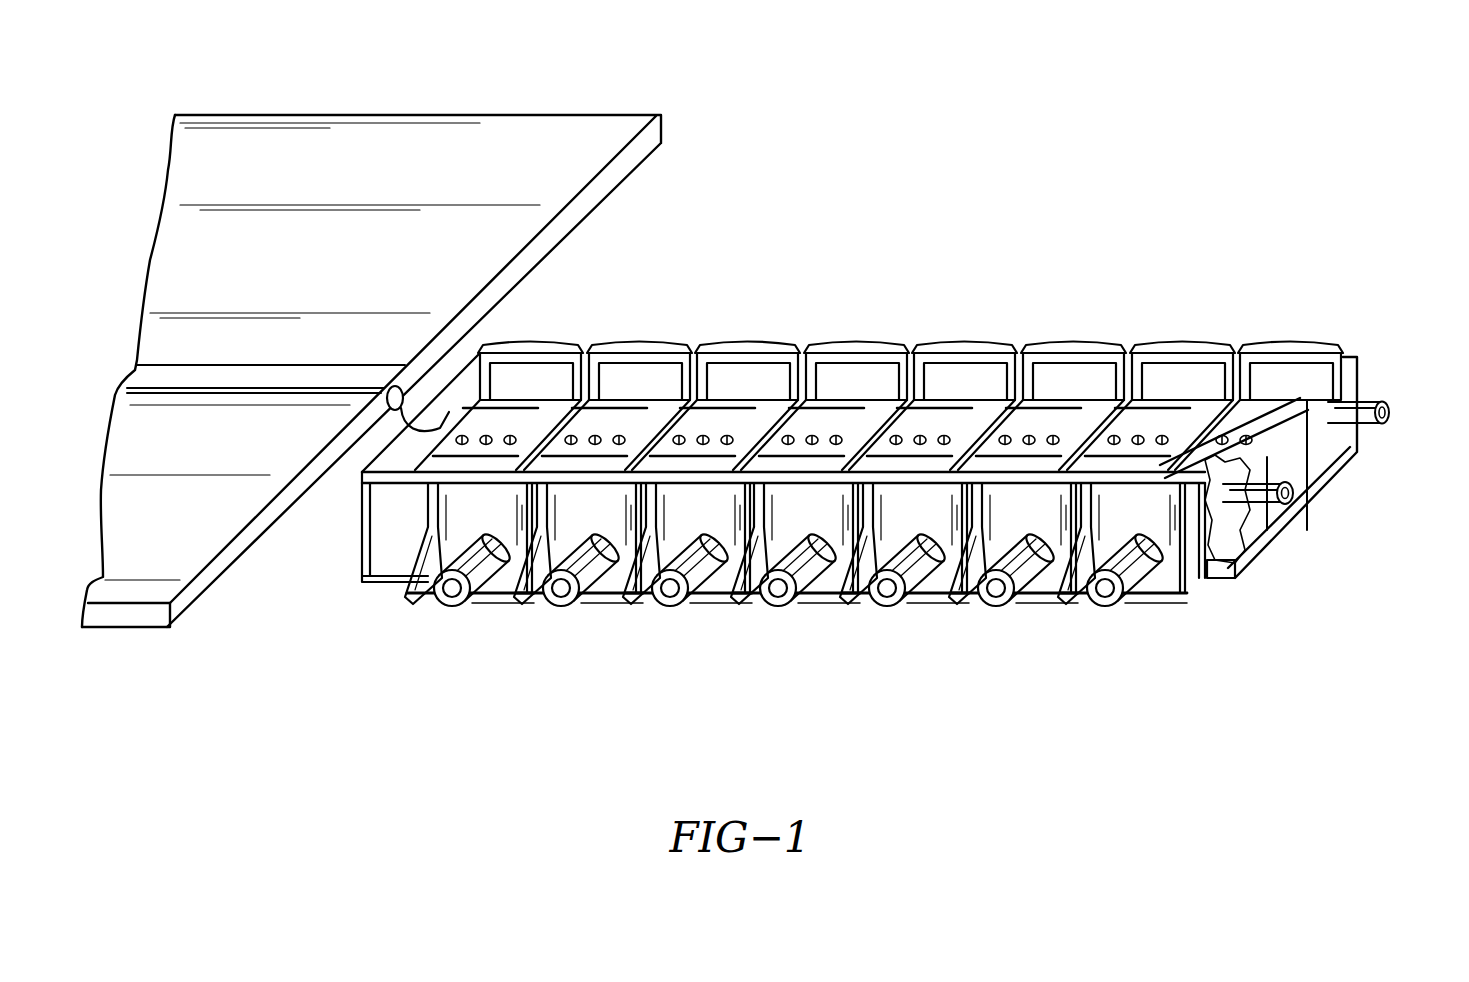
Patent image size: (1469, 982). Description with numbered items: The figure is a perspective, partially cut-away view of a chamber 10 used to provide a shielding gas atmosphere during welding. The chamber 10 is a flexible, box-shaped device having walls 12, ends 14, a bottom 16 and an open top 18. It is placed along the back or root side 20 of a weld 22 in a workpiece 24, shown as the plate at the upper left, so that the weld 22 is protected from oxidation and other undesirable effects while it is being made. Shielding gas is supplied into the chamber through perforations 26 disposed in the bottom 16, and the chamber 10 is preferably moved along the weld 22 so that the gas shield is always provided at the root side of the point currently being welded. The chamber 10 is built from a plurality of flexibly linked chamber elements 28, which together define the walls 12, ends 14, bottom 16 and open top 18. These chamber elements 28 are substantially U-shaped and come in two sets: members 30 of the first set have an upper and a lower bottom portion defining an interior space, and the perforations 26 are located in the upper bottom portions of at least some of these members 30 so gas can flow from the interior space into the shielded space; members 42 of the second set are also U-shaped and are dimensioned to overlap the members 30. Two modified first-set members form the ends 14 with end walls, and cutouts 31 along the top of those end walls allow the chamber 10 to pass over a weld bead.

The chamber 10 is at (1355, 328).
The walls 12 is at (879, 354).
The ends 14 is at (445, 380).
The bottom 16 is at (937, 422).
The open top 18 is at (730, 390).
The root side 20 is at (392, 418).
The weld 22 is at (218, 386).
The workpiece 24 is at (312, 110).
The perforations 26 is at (593, 438).
The chamber elements 28 is at (1198, 330).
The members of the first set of chamber elements 30 is at (612, 596).
The cutouts 31 is at (418, 385).
The members of the second set of chamber elements 42 is at (818, 590).